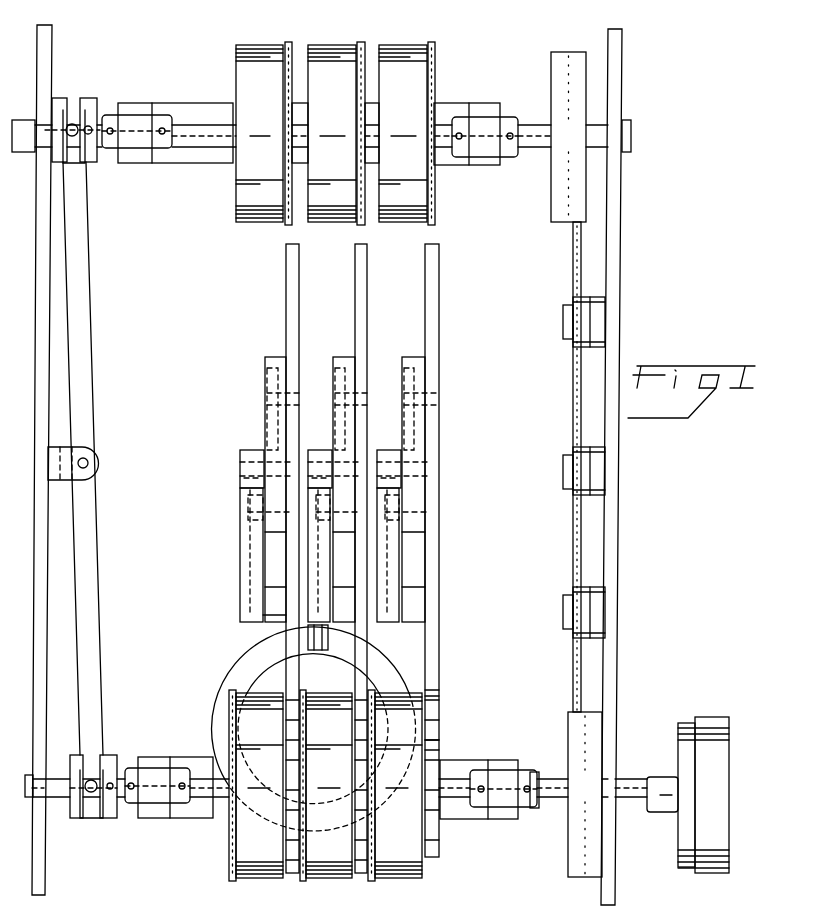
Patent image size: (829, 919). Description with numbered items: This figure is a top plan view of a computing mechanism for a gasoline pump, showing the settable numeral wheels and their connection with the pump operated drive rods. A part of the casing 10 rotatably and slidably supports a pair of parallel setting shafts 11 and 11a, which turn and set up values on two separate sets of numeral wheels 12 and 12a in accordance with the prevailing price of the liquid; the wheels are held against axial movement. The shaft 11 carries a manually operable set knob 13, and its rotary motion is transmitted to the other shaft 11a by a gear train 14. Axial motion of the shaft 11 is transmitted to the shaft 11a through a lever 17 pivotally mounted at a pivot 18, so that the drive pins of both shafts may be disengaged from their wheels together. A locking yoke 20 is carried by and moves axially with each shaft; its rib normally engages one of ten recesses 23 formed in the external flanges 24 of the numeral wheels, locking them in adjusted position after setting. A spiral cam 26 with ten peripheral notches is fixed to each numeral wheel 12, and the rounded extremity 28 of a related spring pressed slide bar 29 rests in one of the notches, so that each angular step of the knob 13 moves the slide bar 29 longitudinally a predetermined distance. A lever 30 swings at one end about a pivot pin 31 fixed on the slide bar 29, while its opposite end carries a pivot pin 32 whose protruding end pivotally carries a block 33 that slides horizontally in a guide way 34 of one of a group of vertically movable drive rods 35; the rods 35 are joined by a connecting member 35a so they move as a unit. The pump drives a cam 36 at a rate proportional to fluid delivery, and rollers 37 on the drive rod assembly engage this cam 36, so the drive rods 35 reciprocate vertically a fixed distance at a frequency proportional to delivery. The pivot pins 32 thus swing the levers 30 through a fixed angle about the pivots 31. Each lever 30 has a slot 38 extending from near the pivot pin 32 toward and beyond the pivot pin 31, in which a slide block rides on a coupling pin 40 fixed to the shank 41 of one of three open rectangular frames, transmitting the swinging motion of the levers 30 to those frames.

The casing 10 is at (622, 455).
The setting shaft 11 is at (562, 800).
The setting shaft 11a is at (213, 148).
The numeral wheels 12 is at (240, 880).
The numeral wheels 12a is at (398, 46).
The set knob 13 is at (702, 717).
The gear train 14 is at (553, 224).
The lever 17 is at (102, 600).
The pivot 18 is at (92, 462).
The locking yoke 20 is at (212, 812).
The recesses 23 is at (430, 178).
The external flanges 24 is at (435, 72).
The spiral cam 26 is at (440, 745).
The rounded extremity 28 is at (437, 696).
The slide bar 29 is at (358, 287).
The lever 30 is at (275, 357).
The pivot pin 31 is at (437, 393).
The pivot pin 32 is at (250, 497).
The block 33 is at (253, 528).
The guide way 34 is at (248, 548).
The drive rods 35 is at (243, 603).
The connecting member 35a is at (265, 622).
The cam 36 is at (388, 668).
The rollers 37 is at (322, 650).
The slot 38 is at (267, 372).
The coupling pin 40 is at (245, 478).
The shank 41 is at (252, 450).